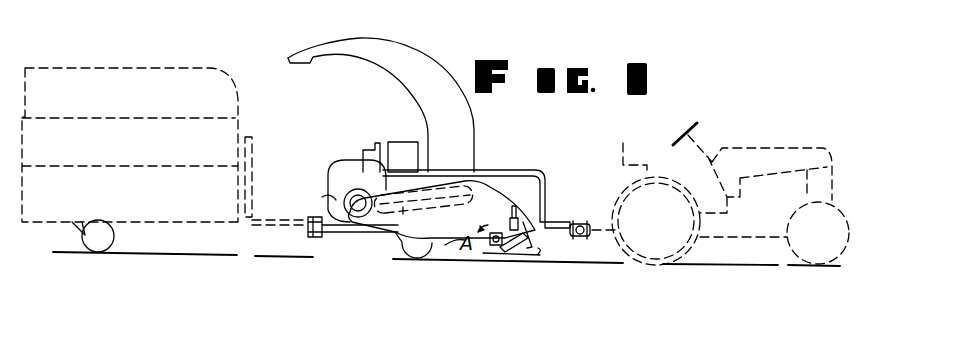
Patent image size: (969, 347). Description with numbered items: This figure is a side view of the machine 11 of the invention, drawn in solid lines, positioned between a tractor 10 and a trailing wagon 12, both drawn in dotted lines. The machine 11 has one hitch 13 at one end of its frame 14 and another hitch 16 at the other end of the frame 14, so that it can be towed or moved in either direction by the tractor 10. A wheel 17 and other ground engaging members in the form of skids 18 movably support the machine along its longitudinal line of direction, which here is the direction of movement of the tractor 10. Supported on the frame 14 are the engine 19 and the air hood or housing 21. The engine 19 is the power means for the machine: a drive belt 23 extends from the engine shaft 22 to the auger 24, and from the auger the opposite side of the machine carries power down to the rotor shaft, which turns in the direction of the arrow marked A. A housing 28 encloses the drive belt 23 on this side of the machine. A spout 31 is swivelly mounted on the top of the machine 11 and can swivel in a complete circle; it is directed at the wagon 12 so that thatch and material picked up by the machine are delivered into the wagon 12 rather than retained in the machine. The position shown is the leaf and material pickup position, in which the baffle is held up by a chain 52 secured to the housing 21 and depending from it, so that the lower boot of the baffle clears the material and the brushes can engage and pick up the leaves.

The tractor 10 is at (745, 142).
The machine 11 is at (503, 153).
The wagon 12 is at (214, 64).
The hitch 13 is at (573, 223).
The frame 14 is at (545, 180).
The hitch 16 is at (313, 217).
The wheel 17 is at (410, 258).
The skids 18 is at (468, 260).
The engine 19 is at (338, 168).
The air hood or housing 21 is at (452, 246).
The engine shaft 22 is at (327, 197).
The drive belt 23 is at (423, 211).
The auger 24 is at (508, 200).
The housing 28 is at (402, 242).
The spout 31 is at (405, 53).
The lift linkage 52 is at (513, 218).